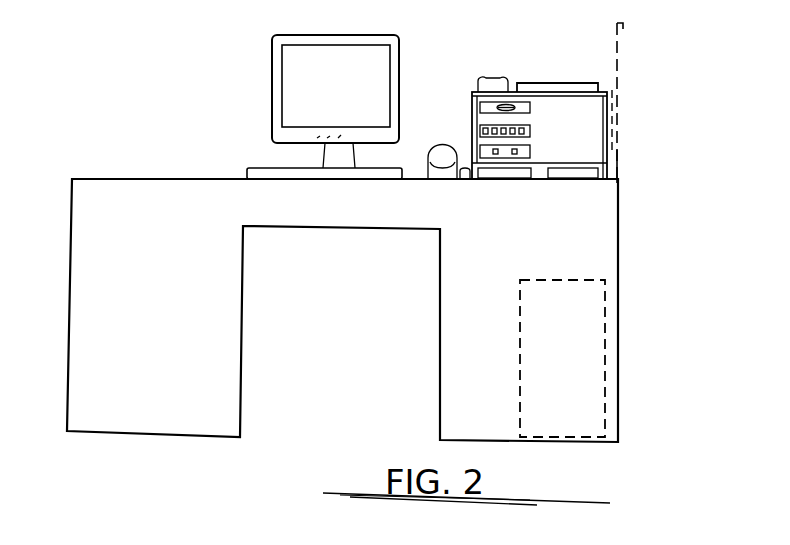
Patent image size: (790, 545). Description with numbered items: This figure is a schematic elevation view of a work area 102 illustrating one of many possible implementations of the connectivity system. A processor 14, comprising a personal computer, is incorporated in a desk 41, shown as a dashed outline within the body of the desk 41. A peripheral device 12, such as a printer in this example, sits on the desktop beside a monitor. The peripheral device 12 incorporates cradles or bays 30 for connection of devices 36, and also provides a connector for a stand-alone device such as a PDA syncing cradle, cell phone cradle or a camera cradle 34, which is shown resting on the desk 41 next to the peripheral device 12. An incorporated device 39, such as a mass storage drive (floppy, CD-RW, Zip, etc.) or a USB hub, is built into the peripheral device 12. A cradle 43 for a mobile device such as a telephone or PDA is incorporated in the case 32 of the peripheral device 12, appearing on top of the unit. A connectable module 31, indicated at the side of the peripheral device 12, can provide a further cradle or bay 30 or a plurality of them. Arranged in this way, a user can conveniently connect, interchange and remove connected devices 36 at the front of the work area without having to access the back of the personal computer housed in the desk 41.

The computer workstation 102 is at (200, 97).
The peripheral device 12 is at (535, 60).
The cradle 43 is at (479, 78).
The case 32 is at (597, 85).
The devices 36 is at (533, 127).
The incorporated device 39 is at (473, 105).
The camera cradle 34 is at (452, 144).
The cradles or bays 30 is at (553, 163).
The connectable module 31 is at (620, 160).
The desk 41 is at (618, 232).
The processor 14 is at (605, 307).